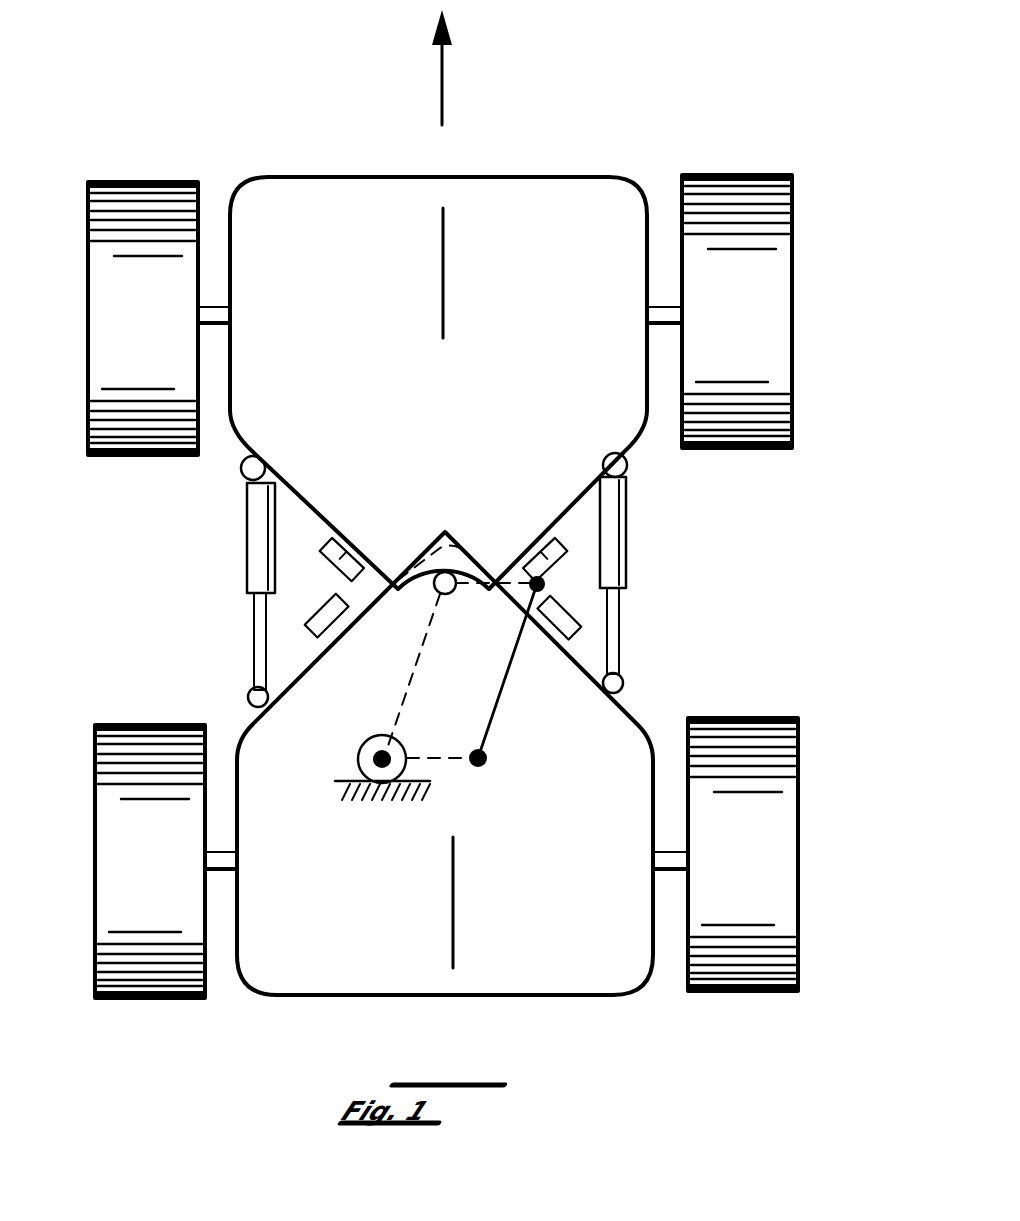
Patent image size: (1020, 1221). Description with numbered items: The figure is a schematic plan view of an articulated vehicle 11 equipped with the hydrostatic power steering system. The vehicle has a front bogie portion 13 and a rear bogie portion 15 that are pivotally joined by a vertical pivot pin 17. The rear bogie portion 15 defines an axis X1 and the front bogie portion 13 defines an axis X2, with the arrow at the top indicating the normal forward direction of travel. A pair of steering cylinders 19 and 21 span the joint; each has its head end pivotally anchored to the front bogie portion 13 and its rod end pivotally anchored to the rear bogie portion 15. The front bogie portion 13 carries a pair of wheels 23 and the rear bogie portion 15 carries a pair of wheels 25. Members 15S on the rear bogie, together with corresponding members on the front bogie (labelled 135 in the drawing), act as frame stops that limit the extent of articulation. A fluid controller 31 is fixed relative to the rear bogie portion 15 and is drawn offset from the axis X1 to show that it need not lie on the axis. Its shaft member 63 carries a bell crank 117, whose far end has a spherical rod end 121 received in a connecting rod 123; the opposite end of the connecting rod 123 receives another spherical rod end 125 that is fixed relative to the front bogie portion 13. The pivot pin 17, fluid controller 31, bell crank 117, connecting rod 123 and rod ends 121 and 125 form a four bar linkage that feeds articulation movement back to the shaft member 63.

The articulated vehicle 11 is at (322, 160).
The front bogie portion 13 is at (560, 177).
The rear bogie portion 15 is at (348, 980).
The vertical pivot pin 17 is at (445, 572).
The steering cylinder 19 is at (247, 540).
The steering cylinder 21 is at (625, 545).
The wheels 23 is at (88, 262).
The wheels 25 is at (95, 822).
The fluid controller 31 is at (358, 758).
The shaft member 63 is at (372, 750).
The bell crank member 117 is at (445, 762).
The spherical rod end 121 is at (487, 758).
The connecting rod 123 is at (515, 662).
The spherical rod end 125 is at (545, 585).
The front section sensor 135 is at (355, 556).
The members 15S is at (330, 625).
The axis X1 is at (454, 900).
The axis X2 is at (444, 262).